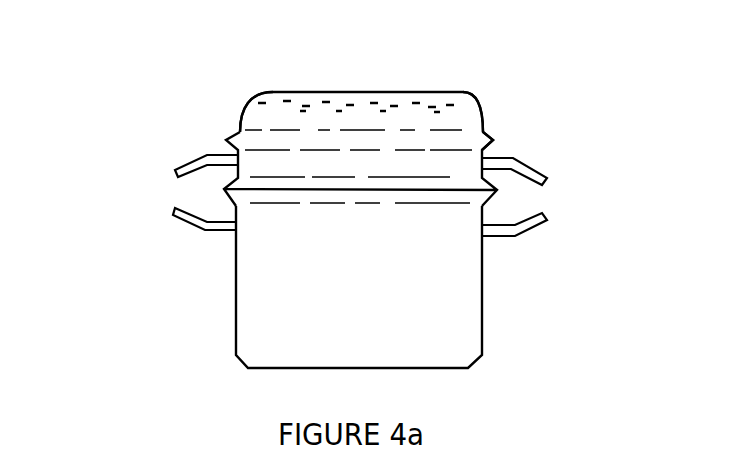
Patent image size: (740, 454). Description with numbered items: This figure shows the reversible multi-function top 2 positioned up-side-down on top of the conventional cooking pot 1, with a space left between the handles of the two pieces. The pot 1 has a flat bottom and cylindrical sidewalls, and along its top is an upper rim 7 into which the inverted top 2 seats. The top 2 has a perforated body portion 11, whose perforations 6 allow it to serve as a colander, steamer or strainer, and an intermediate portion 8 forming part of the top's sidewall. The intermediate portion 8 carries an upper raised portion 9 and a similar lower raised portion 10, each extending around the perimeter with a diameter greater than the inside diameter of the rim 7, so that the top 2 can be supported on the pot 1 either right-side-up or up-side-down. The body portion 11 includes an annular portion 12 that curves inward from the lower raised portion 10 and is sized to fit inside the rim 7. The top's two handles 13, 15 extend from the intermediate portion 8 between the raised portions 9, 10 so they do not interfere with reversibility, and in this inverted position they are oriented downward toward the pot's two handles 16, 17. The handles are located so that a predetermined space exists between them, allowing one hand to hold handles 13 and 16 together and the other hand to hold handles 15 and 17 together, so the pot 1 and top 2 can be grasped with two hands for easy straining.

The pot 1 is at (177, 312).
The top 2 is at (167, 112).
The perforations 6 is at (447, 107).
The upper rim 7 is at (369, 199).
The intermediate portion 8 is at (312, 167).
The upper raised portion 9 is at (390, 182).
The lower raised portion 10 is at (494, 138).
The body portion 11 is at (273, 90).
The annular portion 12 is at (245, 110).
The top handle 13 is at (553, 172).
The top handle 15 is at (172, 170).
The pot handle 16 is at (556, 237).
The pot handle 17 is at (163, 225).